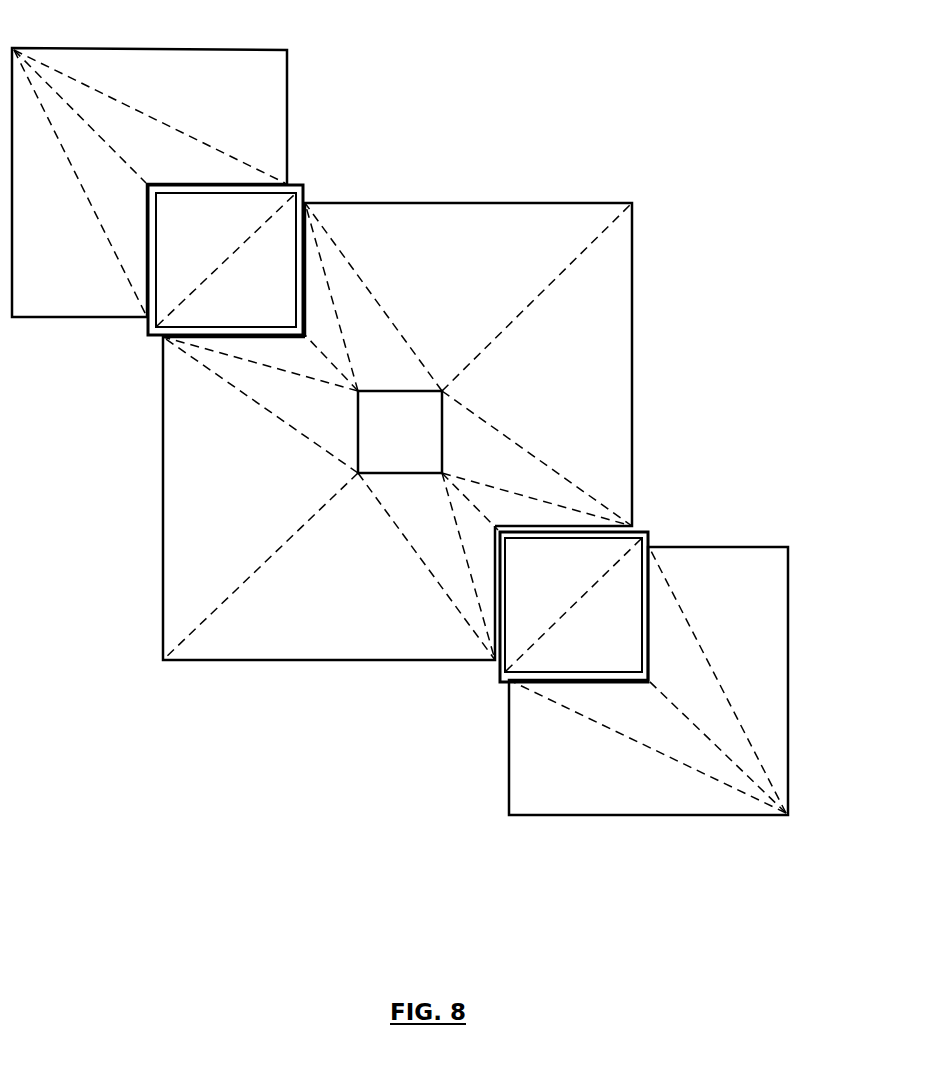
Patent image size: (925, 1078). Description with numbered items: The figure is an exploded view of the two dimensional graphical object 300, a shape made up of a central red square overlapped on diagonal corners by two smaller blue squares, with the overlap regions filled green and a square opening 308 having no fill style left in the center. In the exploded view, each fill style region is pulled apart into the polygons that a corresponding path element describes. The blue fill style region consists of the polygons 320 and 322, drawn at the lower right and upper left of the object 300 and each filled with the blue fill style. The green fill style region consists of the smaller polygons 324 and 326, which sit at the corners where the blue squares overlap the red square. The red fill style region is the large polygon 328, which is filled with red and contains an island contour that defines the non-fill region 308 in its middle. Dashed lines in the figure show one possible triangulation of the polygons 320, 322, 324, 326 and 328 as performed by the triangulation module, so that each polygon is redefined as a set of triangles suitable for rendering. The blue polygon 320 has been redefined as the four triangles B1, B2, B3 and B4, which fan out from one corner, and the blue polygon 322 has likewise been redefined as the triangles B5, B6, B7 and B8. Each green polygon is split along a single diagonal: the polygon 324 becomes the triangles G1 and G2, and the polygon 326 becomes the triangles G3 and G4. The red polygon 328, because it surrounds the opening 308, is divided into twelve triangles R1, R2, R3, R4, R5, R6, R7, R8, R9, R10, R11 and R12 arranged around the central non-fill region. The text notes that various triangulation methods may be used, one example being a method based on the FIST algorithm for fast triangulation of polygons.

The graphical object 300 is at (640, 90).
The square opening 308 is at (378, 448).
The polygon 320 is at (765, 545).
The polygon 322 is at (288, 50).
The polygon 324 is at (645, 537).
The polygon 326 is at (303, 186).
The polygon 328 is at (633, 203).
The triangle R1 is at (332, 595).
The triangle R2 is at (240, 485).
The triangle R3 is at (316, 420).
The triangle R4 is at (280, 366).
The triangle R5 is at (306, 336).
The triangle R6 is at (372, 366).
The triangle R7 is at (434, 298).
The triangle R8 is at (526, 406).
The triangle R9 is at (462, 466).
The triangle R10 is at (490, 525).
The triangle R11 is at (449, 548).
The triangle R12 is at (390, 513).
The triangle G1 is at (578, 650).
The triangle G2 is at (534, 580).
The triangle G3 is at (232, 306).
The triangle G4 is at (194, 251).
The triangle B1 is at (728, 610).
The triangle B2 is at (662, 665).
The triangle B3 is at (616, 720).
The triangle B4 is at (608, 785).
The triangle B5 is at (40, 265).
The triangle B6 is at (110, 201).
The triangle B7 is at (150, 159).
The triangle B8 is at (214, 115).